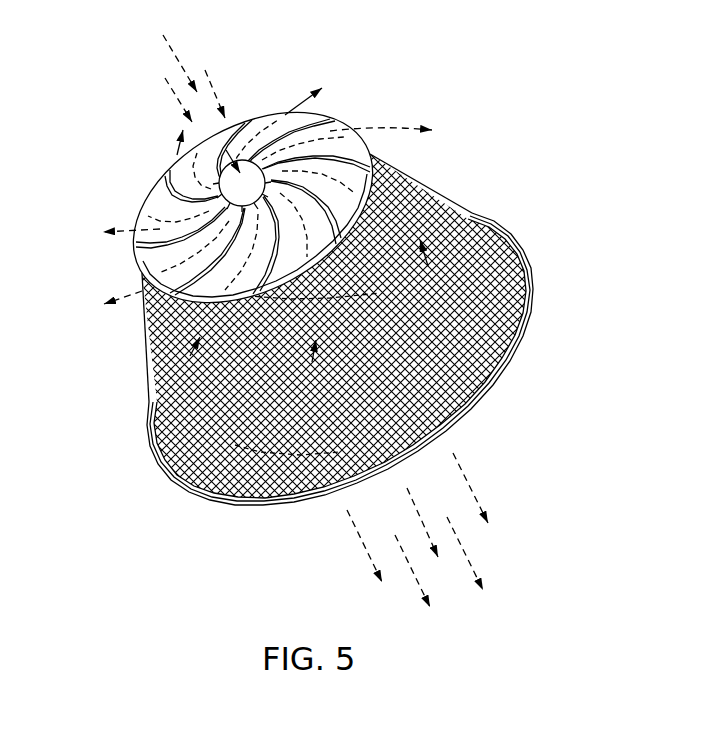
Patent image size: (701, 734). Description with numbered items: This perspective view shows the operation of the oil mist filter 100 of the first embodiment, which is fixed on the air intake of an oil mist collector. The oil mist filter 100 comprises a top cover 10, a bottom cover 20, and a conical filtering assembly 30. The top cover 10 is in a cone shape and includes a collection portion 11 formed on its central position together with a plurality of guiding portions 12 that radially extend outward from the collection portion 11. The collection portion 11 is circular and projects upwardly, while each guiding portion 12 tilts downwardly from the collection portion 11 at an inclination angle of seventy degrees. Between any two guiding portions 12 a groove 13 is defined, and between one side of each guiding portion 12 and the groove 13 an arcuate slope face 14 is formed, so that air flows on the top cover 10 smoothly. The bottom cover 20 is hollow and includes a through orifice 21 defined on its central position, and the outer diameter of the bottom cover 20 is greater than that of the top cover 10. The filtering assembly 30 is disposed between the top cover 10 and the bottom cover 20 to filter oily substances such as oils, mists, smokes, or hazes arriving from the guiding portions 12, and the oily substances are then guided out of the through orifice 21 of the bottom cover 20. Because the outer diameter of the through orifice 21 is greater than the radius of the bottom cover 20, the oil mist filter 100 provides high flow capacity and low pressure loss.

The oil mist filter 100 is at (507, 417).
The top cover 10 is at (152, 176).
The collection portion 11 is at (252, 170).
The guiding portion 12 is at (353, 153).
The groove 13 is at (407, 169).
The arcuate slope face 14 is at (348, 187).
The bottom cover 20 is at (262, 512).
The through orifice 21 is at (502, 371).
The conical filtering assembly 30 is at (145, 352).